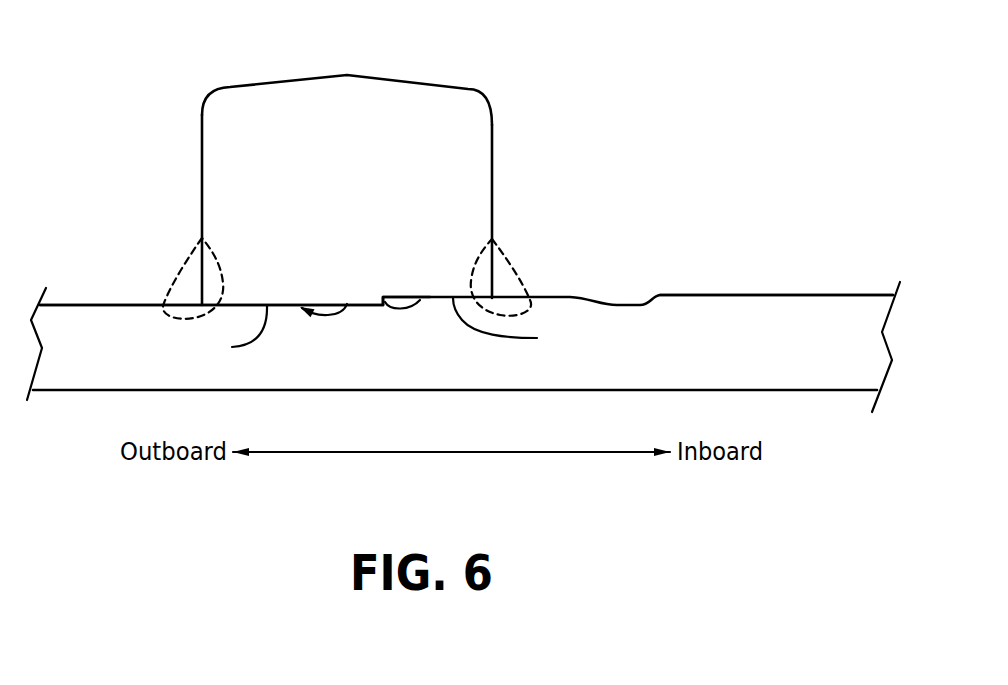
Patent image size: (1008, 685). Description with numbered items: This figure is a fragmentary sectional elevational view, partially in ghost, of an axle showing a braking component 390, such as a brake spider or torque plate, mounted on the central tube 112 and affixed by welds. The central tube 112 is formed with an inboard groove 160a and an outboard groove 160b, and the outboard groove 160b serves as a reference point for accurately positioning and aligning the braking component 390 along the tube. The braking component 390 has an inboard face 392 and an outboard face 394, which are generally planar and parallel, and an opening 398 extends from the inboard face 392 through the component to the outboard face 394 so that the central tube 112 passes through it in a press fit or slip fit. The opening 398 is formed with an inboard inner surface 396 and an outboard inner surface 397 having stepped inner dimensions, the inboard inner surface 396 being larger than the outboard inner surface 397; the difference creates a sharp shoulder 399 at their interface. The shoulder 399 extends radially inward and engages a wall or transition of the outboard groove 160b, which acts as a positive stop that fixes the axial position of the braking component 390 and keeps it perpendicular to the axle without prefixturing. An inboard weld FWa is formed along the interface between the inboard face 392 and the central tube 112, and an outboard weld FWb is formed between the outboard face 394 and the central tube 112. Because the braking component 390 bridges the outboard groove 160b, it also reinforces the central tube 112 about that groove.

The central tube 112 is at (752, 292).
The inboard groove 160a is at (644, 309).
The outboard groove 160b is at (370, 310).
The braking component 390 is at (288, 78).
The inboard face 392 is at (493, 127).
The outboard face 394 is at (202, 157).
The inboard inner surface 396 is at (518, 326).
The outboard inner surface 397 is at (226, 334).
The opening 398 is at (347, 304).
The shoulder 399 is at (420, 300).
The inboard weld FWa is at (520, 262).
The outboard weld FWb is at (184, 262).